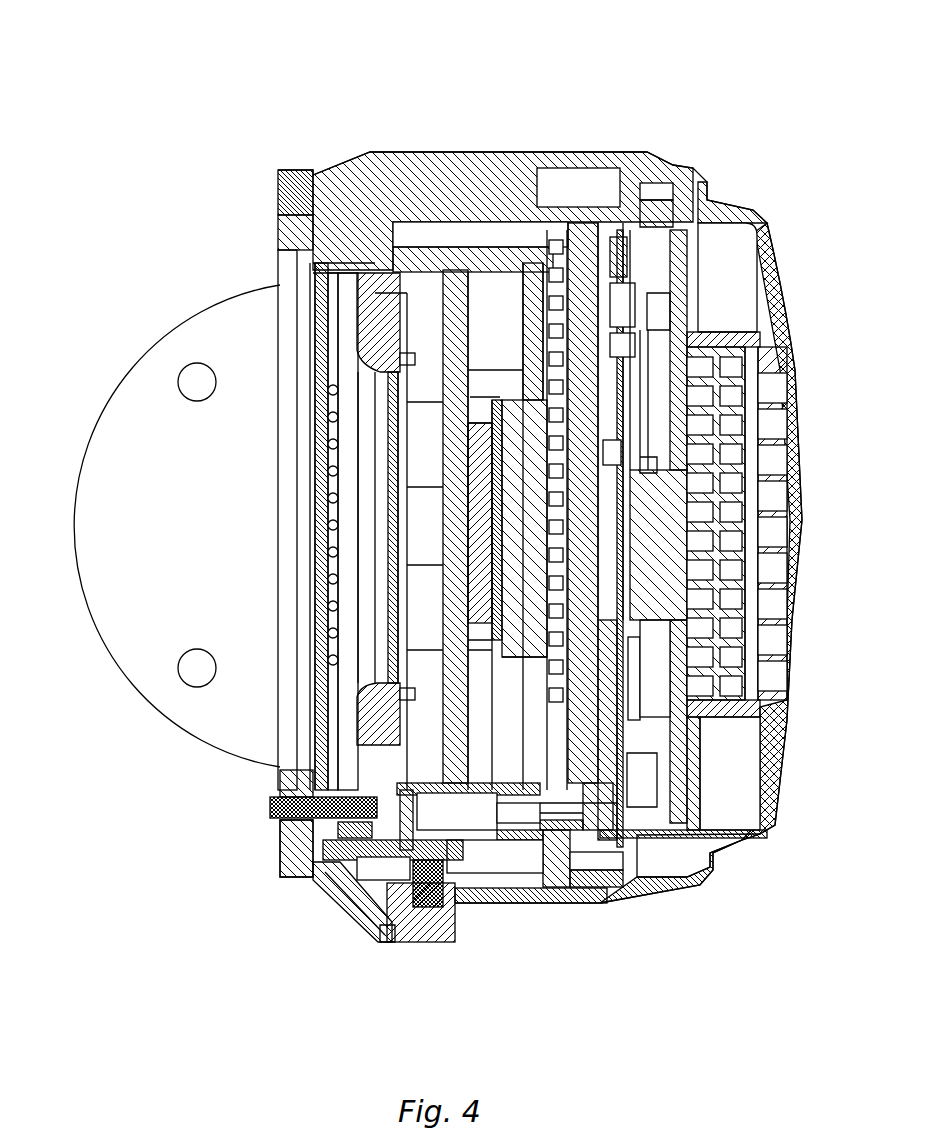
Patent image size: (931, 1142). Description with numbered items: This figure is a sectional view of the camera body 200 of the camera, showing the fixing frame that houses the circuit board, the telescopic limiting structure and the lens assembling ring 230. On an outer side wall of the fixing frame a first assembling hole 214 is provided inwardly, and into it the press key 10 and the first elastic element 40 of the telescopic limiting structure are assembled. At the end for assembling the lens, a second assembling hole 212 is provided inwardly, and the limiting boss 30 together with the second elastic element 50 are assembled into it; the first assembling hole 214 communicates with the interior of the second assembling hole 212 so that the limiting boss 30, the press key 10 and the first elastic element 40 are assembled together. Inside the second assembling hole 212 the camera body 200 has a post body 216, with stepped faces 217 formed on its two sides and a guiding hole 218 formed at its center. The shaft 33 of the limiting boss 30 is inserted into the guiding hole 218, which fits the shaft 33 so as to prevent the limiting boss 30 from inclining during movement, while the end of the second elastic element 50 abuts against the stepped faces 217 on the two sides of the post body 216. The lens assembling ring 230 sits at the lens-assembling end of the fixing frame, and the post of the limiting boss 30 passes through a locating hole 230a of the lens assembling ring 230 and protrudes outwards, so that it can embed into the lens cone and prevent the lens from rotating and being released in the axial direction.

The camera body 200 is at (549, 34).
The shaft 33 is at (332, 760).
The locating hole 230a is at (278, 785).
The limiting boss 30 is at (272, 806).
The lens assembling ring 230 is at (283, 826).
The second assembling hole 212 is at (293, 842).
The second elastic element 50 is at (342, 850).
The post body 216 is at (372, 860).
The stepped faces 217 is at (385, 870).
The first assembling hole 214 is at (390, 940).
The press key 10 is at (407, 942).
The first elastic element 40 is at (435, 905).
The guiding hole 218 is at (468, 830).